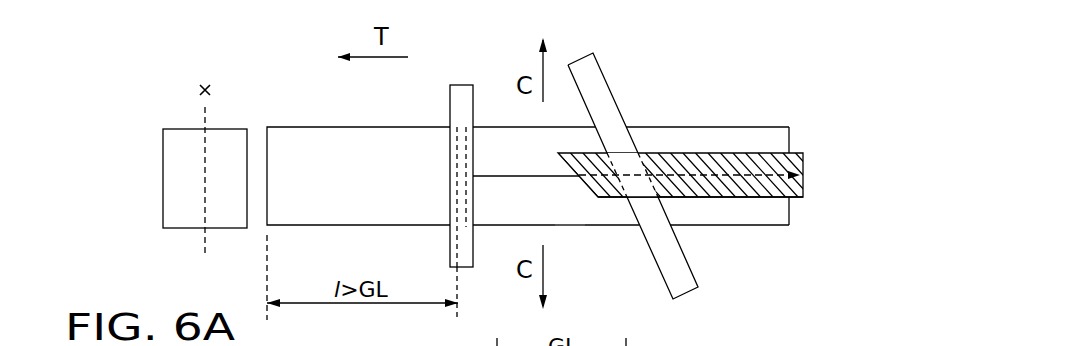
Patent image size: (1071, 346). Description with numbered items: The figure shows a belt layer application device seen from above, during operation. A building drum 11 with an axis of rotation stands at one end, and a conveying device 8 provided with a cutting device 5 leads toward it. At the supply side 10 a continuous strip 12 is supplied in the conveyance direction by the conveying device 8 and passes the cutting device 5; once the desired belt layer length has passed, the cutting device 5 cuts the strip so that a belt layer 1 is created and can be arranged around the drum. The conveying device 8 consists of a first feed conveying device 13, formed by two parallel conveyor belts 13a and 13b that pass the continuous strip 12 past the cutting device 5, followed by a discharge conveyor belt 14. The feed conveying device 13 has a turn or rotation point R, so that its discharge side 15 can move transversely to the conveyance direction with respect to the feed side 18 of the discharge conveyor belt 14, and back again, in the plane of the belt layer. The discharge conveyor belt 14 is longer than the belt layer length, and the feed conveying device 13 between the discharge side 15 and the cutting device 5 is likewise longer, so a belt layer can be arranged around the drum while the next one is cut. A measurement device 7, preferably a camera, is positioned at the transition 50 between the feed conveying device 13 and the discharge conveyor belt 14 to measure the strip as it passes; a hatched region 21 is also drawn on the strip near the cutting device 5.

The belt layer 1 is at (743, 190).
The cutting device 5 is at (600, 97).
The measurement device 7 is at (463, 268).
The conveying device 8 is at (682, 111).
The supply side 10 is at (777, 138).
The building drum 11 is at (163, 151).
The continuous strip 12 is at (802, 188).
The feed conveying device 13 is at (615, 208).
The conveyor belt 13a is at (558, 143).
The conveyor belt 13b is at (568, 208).
The discharge conveyor belt 14 is at (310, 208).
The discharge side 15 is at (468, 162).
The feed side 18 is at (457, 147).
The hatched region 21 is at (628, 180).
The transition 50 is at (463, 86).
The turn or rotation point R is at (805, 172).